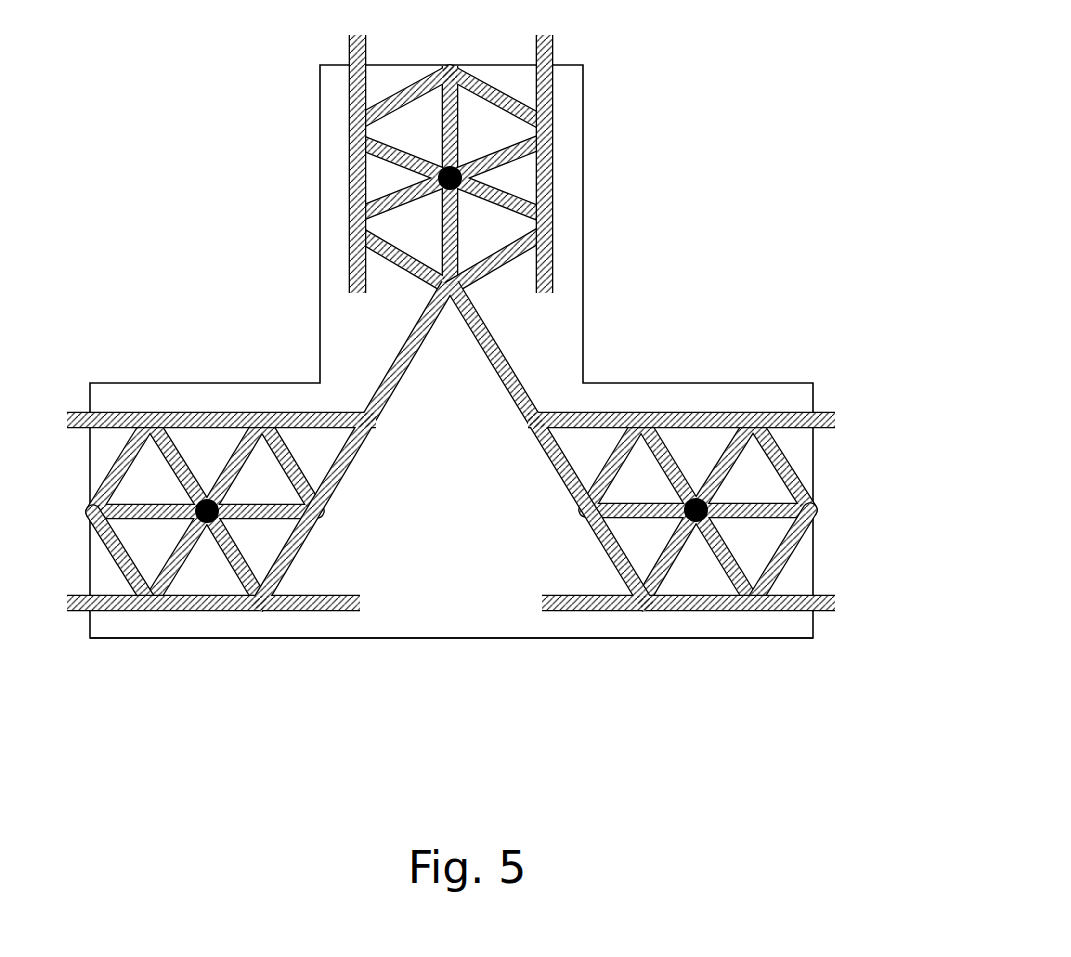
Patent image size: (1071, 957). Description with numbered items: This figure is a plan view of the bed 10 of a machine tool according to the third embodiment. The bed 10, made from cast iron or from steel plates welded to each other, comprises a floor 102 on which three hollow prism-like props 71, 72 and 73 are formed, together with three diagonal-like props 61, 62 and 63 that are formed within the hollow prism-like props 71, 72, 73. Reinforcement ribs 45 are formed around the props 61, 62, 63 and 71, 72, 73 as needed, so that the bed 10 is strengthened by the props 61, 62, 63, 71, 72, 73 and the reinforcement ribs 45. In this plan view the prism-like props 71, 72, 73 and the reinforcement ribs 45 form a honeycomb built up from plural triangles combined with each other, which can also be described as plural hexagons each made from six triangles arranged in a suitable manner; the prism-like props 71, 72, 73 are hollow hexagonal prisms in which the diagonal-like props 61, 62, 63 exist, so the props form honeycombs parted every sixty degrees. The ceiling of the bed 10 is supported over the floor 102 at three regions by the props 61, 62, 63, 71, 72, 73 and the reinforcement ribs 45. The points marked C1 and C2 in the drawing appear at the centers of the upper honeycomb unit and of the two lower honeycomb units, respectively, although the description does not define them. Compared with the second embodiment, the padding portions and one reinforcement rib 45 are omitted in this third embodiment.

The bed 10 is at (675, 78).
The reinforcement ribs 45 is at (357, 270).
The diagonal-like prop 61 is at (468, 111).
The diagonal-like prop 62 is at (169, 533).
The diagonal-like prop 63 is at (745, 530).
The hollow prism-like prop 71 is at (497, 277).
The hollow prism-like prop 72 is at (104, 565).
The hollow prism-like prop 73 is at (802, 559).
The floor 102 is at (407, 615).
The node C1 is at (438, 177).
The node C2 is at (195, 507).